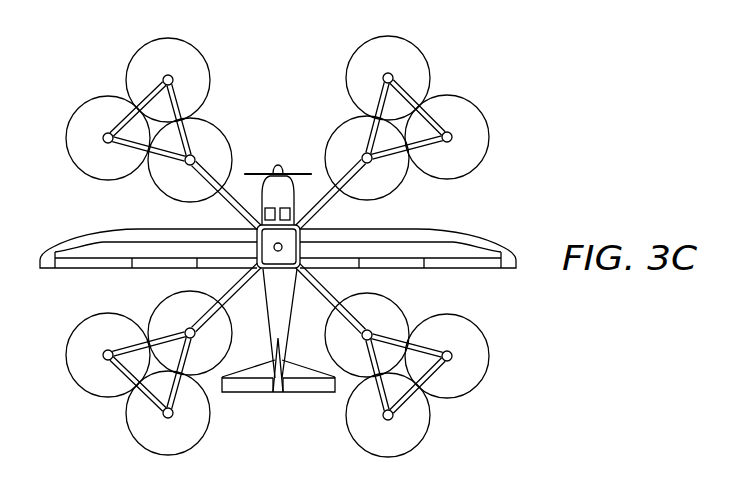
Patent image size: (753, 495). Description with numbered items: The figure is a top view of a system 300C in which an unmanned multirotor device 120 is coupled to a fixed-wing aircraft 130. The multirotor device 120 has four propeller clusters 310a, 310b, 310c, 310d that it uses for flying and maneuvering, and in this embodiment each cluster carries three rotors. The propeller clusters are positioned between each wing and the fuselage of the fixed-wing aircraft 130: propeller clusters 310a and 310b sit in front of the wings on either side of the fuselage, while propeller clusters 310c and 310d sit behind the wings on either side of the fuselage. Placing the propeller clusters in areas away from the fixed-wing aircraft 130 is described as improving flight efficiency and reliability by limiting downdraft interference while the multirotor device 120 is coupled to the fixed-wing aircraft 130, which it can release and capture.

The system 300C is at (572, 138).
The multirotor device 120 is at (262, 195).
The fixed-wing aircraft 130 is at (473, 232).
The propeller cluster 310a is at (452, 80).
The propeller cluster 310b is at (114, 89).
The propeller cluster 310c is at (106, 414).
The propeller cluster 310d is at (450, 412).